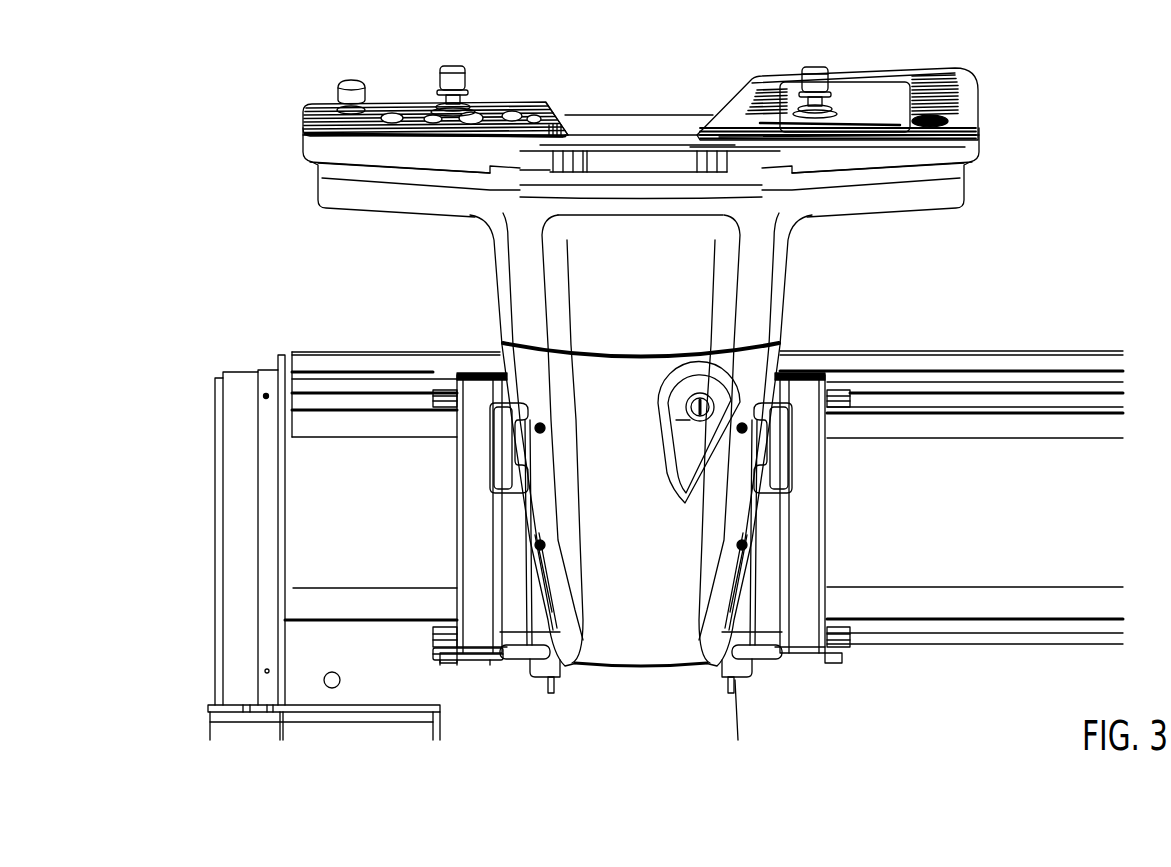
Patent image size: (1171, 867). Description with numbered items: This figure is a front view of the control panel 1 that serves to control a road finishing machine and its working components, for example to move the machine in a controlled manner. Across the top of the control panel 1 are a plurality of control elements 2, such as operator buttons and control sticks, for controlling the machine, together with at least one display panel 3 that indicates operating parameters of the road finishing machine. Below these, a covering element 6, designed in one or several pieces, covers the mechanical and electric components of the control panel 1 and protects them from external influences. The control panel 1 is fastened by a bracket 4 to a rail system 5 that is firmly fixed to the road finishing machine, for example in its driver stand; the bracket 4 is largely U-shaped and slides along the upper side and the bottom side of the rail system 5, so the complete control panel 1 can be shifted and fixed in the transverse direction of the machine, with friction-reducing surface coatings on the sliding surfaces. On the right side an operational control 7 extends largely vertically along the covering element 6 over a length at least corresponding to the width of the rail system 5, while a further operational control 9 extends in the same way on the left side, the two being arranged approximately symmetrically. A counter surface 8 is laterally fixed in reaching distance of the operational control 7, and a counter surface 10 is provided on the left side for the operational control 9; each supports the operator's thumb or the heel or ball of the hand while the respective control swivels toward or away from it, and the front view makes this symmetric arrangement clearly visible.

The control panel 1 is at (630, 74).
The control elements 2 is at (398, 107).
The display panel 3 is at (868, 97).
The bracket 4 is at (440, 646).
The rail system 5 is at (387, 375).
The covering element 6 is at (757, 290).
The operational control 7 is at (800, 538).
The counter surface 8 is at (778, 458).
The further operational control 9 is at (478, 542).
The counter surface 10 is at (502, 457).